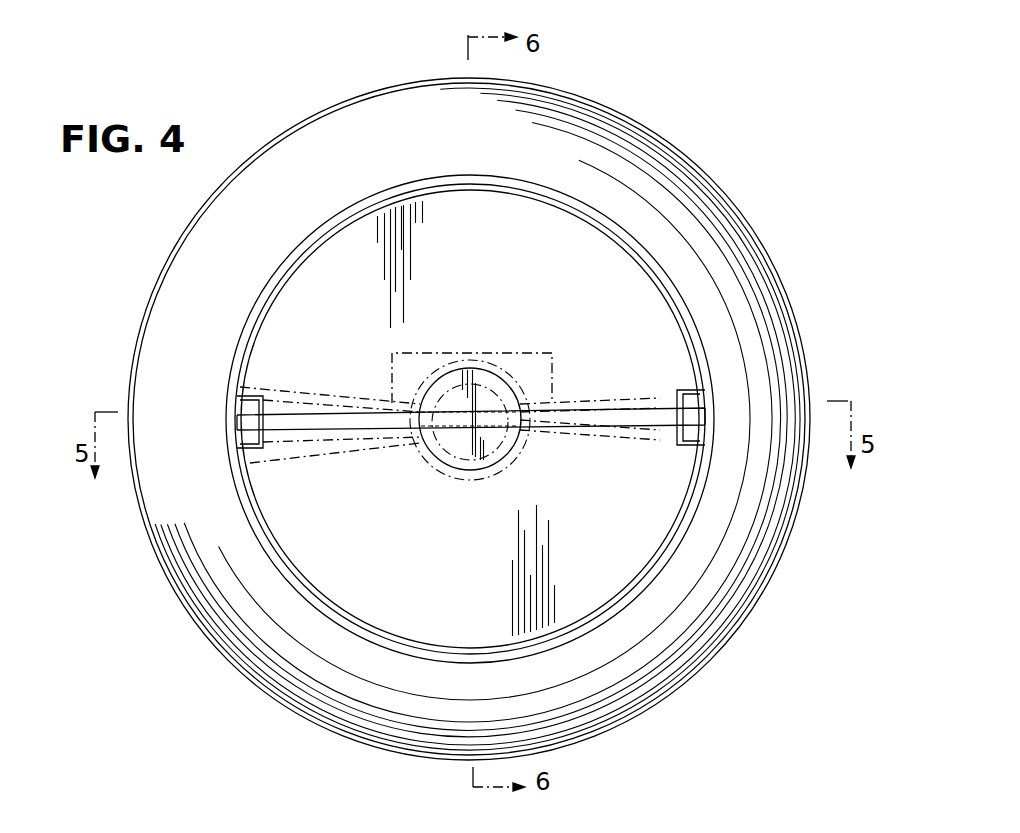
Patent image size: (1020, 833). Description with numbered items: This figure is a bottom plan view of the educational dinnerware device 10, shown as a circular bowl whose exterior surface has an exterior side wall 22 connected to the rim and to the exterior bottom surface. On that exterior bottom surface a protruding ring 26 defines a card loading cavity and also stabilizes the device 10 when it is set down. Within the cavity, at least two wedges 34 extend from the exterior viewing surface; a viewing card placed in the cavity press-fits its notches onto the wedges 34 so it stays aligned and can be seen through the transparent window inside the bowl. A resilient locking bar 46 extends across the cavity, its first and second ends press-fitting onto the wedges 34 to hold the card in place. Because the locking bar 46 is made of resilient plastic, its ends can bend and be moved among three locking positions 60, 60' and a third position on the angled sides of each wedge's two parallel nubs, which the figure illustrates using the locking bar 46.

The educational dinnerware device 10 is at (788, 165).
The exterior side wall 22 is at (538, 142).
The protruding ring 26 is at (677, 303).
The wedges 34 is at (723, 375).
The resilient locking bar 46 is at (540, 424).
The locking position 60 is at (371, 384).
The locking position 60' is at (352, 362).